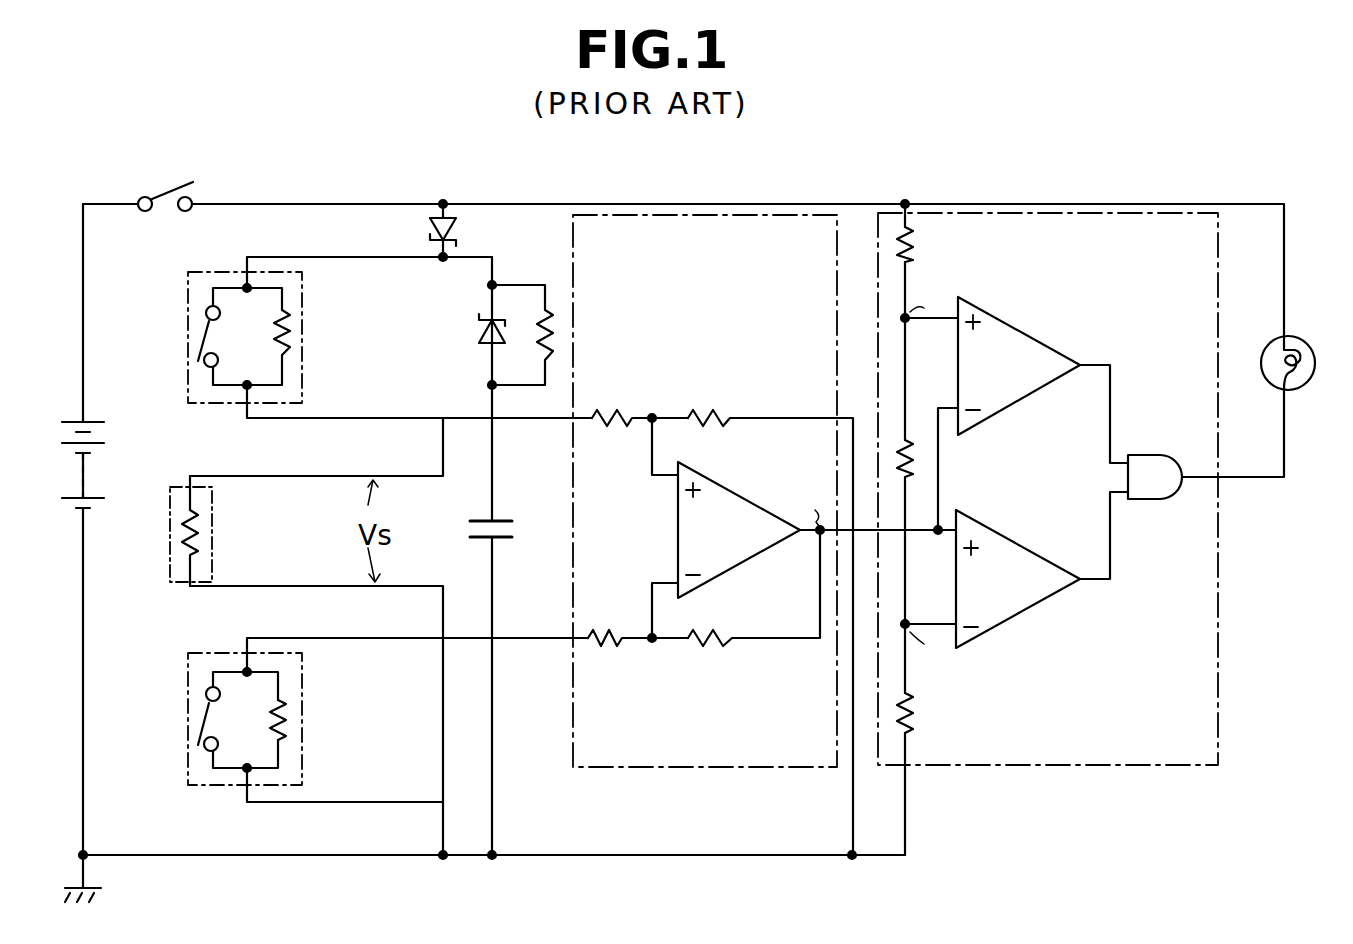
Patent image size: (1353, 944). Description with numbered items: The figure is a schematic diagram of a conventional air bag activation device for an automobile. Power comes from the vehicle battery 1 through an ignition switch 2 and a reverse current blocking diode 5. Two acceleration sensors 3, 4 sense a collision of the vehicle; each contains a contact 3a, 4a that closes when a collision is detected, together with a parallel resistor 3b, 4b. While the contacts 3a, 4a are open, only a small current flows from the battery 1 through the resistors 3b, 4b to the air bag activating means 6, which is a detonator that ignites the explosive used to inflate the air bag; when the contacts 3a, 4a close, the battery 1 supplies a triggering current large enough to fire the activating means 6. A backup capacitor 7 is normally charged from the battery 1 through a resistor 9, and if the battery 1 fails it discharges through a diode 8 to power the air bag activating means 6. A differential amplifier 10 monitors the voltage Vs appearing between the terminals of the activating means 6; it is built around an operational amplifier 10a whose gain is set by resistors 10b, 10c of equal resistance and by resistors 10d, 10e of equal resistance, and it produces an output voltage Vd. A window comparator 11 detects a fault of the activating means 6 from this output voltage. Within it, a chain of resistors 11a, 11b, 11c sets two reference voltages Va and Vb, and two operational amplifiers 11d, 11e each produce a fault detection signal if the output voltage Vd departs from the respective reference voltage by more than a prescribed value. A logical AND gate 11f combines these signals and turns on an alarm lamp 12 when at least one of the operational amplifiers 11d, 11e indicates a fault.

The battery 1 is at (112, 432).
The ignition switch 2 is at (165, 190).
The acceleration sensor 3 is at (360, 337).
The contact 3a is at (205, 322).
The resistor 3b is at (290, 345).
The acceleration sensor 4 is at (356, 720).
The contact 4a is at (205, 706).
The resistor 4b is at (286, 728).
The reverse current blocking diode 5 is at (458, 232).
The air bag activating means 6 is at (214, 545).
The backup capacitor 7 is at (514, 528).
The diode 8 is at (478, 332).
The resistor 9 is at (537, 338).
The differential amplifier 10 is at (703, 770).
The operational amplifier 10a is at (745, 466).
The gain setting resistor 10b is at (608, 410).
The gain setting resistor 10c is at (606, 650).
The gain setting resistor 10d is at (706, 410).
The gain setting resistor 10e is at (711, 650).
The window comparator 11 is at (1128, 768).
The resistor 11a is at (918, 247).
The resistor 11b is at (912, 440).
The resistor 11c is at (918, 722).
The operational amplifier 11d is at (1015, 330).
The operational amplifier 11e is at (1000, 532).
The logical AND gate 11f is at (1148, 502).
The alarm lamp 12 is at (1296, 340).